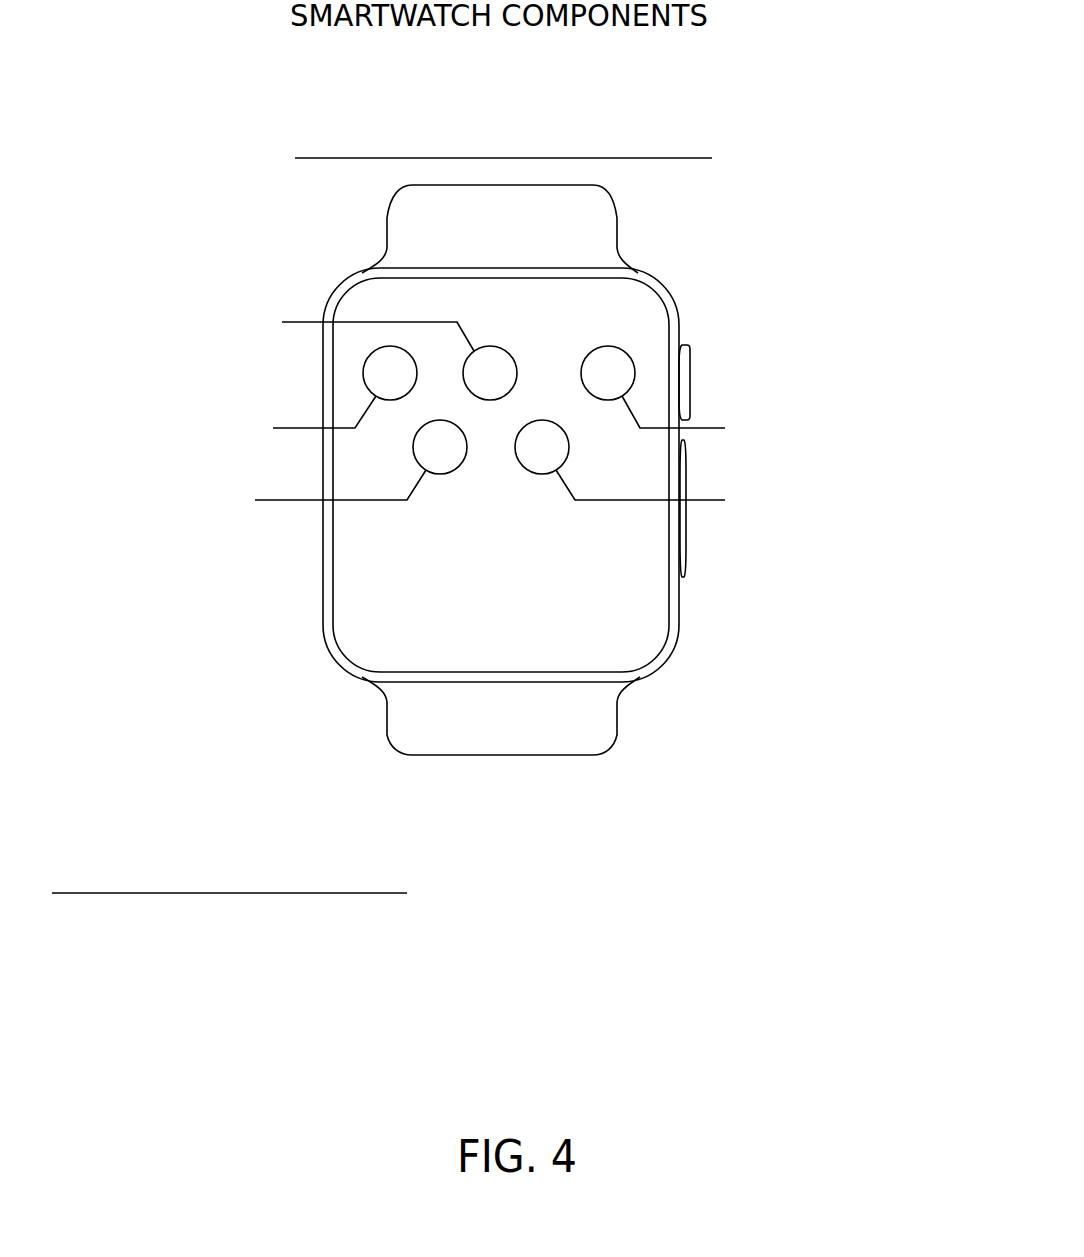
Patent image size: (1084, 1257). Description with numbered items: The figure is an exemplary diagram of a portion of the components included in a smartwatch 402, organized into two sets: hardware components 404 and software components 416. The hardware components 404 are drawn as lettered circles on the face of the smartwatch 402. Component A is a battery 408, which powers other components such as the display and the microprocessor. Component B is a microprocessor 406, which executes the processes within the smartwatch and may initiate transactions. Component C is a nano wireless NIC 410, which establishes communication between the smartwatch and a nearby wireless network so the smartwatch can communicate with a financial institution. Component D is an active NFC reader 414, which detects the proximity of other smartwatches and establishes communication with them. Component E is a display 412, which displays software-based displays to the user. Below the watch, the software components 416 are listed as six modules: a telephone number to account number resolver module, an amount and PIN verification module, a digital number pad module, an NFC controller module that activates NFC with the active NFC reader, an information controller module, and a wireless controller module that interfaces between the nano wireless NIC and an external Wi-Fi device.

The smartwatch 402 is at (672, 303).
The hardware components 404 is at (717, 147).
The microprocessor 406 is at (823, 422).
The battery 408 is at (158, 497).
The nano wireless NIC 410 is at (183, 275).
The display 412 is at (780, 518).
The active NFC reader 414 is at (143, 407).
The software components 416 is at (410, 878).